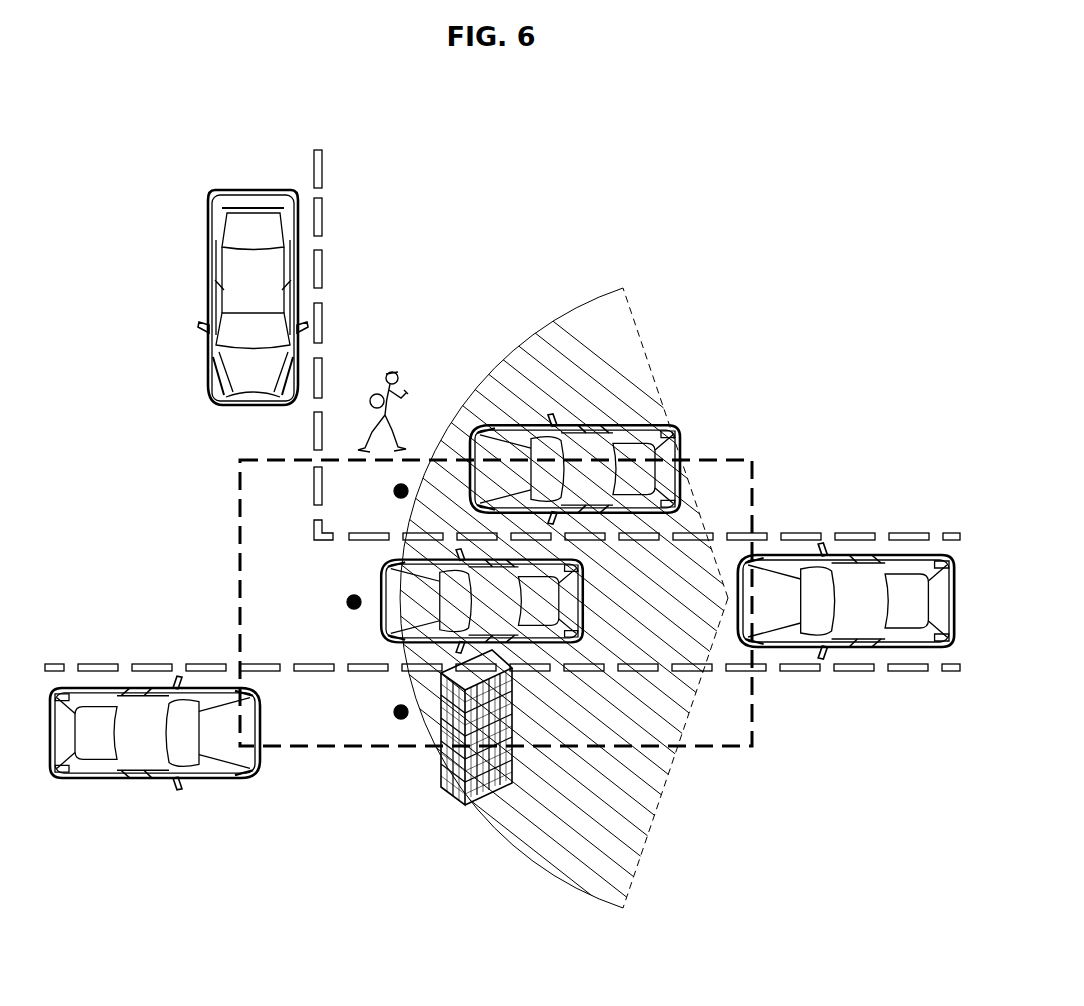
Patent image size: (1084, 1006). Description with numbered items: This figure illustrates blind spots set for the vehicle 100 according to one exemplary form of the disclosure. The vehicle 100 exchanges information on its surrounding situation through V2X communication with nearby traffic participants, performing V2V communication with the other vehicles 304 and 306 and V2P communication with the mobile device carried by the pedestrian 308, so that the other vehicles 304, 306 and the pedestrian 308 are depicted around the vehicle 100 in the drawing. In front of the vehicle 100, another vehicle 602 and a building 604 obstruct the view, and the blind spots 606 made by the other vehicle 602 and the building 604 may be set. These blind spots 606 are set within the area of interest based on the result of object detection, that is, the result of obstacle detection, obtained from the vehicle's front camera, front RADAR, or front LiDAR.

The vehicle 100 is at (862, 555).
The other vehicle 304 is at (162, 778).
The other vehicle 306 is at (237, 190).
The pedestrian 308 is at (385, 378).
The another vehicle 602 is at (640, 432).
The building 604 is at (447, 790).
The blind spots 606 is at (394, 491).